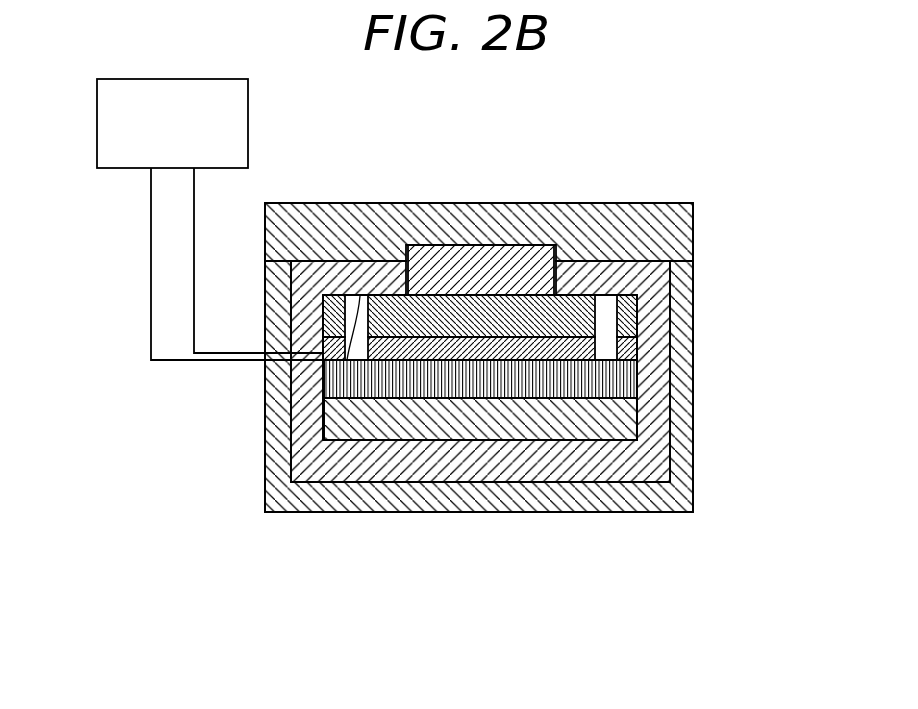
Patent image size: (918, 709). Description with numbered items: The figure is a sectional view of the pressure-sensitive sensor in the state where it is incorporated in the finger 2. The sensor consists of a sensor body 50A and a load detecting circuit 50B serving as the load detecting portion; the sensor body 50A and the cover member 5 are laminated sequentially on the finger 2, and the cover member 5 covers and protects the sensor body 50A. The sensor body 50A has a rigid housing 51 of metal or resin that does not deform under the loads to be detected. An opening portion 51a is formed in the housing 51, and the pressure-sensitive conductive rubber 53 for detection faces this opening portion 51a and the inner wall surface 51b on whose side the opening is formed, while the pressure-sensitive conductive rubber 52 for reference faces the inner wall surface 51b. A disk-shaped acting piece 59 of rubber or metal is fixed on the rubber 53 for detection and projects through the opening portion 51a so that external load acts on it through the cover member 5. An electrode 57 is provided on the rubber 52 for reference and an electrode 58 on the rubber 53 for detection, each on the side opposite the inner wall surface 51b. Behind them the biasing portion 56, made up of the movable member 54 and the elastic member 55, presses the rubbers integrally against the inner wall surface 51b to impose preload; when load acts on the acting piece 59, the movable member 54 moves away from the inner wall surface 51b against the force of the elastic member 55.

The finger 2 is at (323, 497).
The cover member 5 is at (636, 203).
The sensor body 50A is at (667, 118).
The load detecting circuit 50B is at (248, 108).
The housing 51 is at (650, 276).
The opening portion 51a is at (558, 203).
The inner wall surface 51b is at (325, 377).
The pressure-sensitive conductive rubber for reference 52 is at (325, 313).
The pressure-sensitive conductive rubber for detection 53 is at (388, 294).
The movable member 54 is at (395, 383).
The elastic member 55 is at (470, 417).
The biasing portion 56 is at (500, 573).
The electrode 57 is at (638, 360).
The electrode 58 is at (580, 353).
The acting piece 59 is at (482, 203).